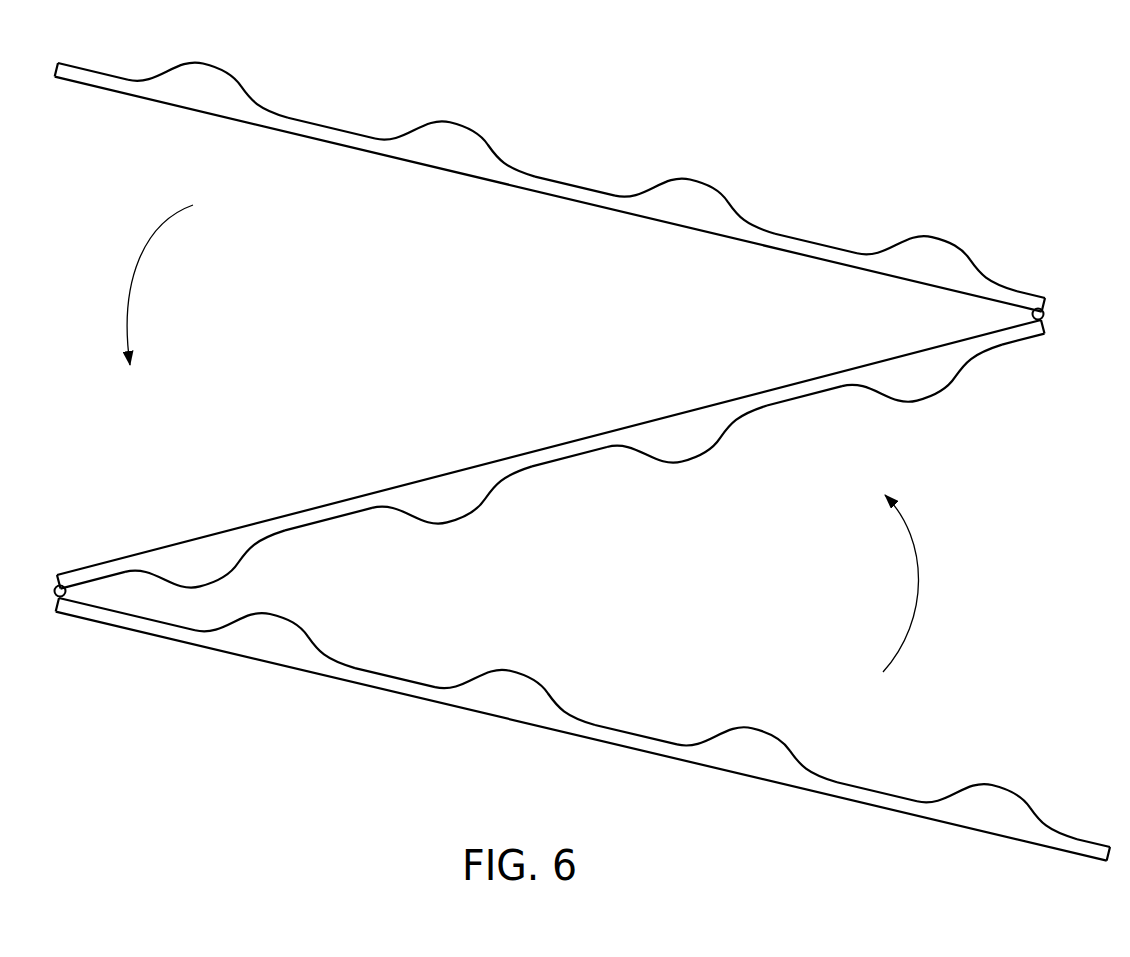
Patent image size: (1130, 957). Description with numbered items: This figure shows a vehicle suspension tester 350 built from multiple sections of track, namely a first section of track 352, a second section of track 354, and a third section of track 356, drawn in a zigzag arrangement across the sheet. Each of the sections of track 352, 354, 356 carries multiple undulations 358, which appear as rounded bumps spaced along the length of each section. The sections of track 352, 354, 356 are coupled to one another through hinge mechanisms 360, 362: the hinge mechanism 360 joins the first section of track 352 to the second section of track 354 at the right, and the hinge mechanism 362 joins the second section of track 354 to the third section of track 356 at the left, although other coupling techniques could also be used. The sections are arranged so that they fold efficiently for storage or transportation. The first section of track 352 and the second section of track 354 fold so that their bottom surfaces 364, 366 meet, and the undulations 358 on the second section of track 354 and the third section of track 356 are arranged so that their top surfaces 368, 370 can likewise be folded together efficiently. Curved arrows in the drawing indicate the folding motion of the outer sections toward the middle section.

The vehicle suspension tester 350 is at (566, 441).
The first section of track 352 is at (532, 189).
The second section of track 354 is at (458, 471).
The third section of track 356 is at (478, 713).
The undulations 358 is at (201, 61).
The hinge mechanism 360 is at (1045, 313).
The hinge mechanism 362 is at (53, 586).
The bottom surface 364 is at (612, 240).
The bottom surface 366 is at (607, 410).
The top surface 368 is at (634, 489).
The top surface 370 is at (664, 698).